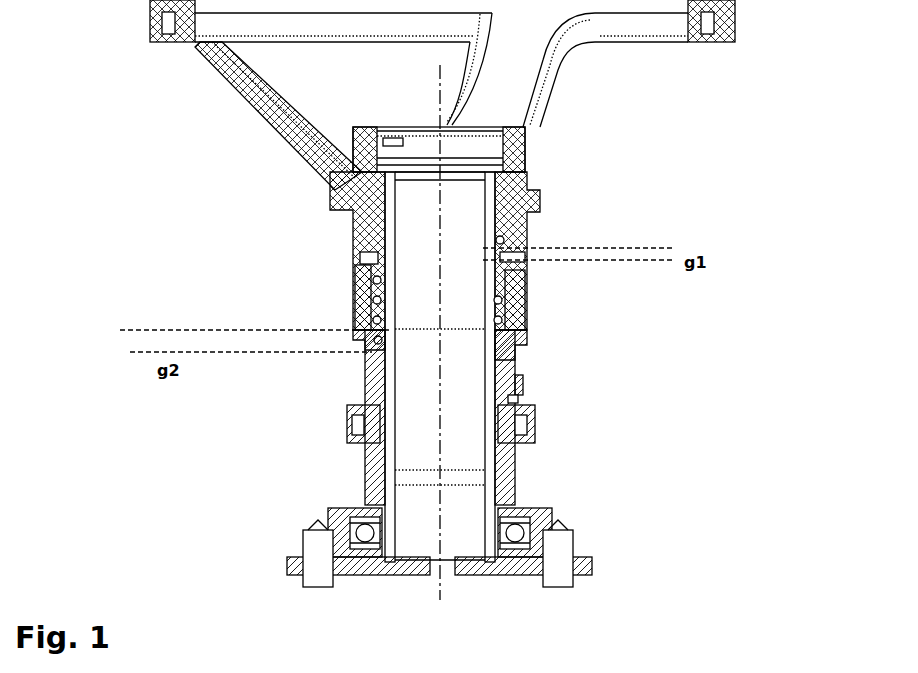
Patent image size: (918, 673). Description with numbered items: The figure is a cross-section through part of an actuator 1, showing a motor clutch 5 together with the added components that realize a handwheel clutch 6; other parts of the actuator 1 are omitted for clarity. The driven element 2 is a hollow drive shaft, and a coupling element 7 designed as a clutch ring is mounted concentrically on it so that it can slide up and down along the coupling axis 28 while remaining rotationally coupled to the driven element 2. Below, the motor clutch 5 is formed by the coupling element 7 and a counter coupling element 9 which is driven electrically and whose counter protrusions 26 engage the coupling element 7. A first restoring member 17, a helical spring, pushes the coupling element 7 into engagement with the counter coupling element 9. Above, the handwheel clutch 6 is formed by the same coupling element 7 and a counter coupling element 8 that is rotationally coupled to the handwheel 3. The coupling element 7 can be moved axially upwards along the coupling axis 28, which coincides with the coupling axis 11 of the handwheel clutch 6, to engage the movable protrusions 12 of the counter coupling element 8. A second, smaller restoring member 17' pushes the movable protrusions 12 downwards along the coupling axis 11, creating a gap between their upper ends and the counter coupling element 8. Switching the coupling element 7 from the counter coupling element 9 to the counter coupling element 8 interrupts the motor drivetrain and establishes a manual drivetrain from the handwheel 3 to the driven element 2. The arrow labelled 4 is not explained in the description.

The actuator 1 is at (776, 117).
The driven element 2 is at (362, 382).
The handwheel 3 is at (250, 90).
The steering column direction 4 is at (176, 213).
The motor clutch 5 is at (682, 345).
The handwheel clutch 6 is at (728, 182).
The coupling element 7 is at (540, 370).
The counter coupling element 8 is at (537, 205).
The counter coupling element 9 is at (536, 418).
The coupling axis 11 is at (438, 110).
The movable protrusion 12 is at (355, 288).
The first restoring member 17 is at (300, 324).
The second restoring member 17' is at (579, 242).
The counter protrusions 26 is at (528, 394).
The coupling axis 28 is at (438, 496).